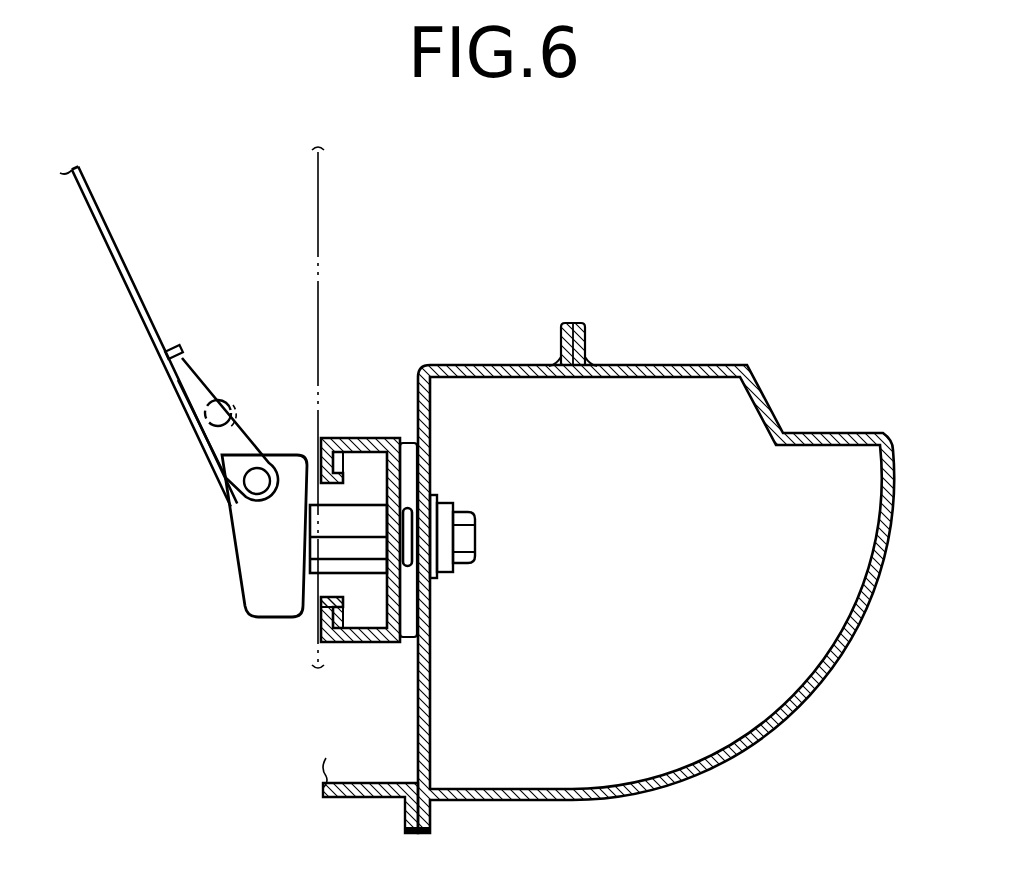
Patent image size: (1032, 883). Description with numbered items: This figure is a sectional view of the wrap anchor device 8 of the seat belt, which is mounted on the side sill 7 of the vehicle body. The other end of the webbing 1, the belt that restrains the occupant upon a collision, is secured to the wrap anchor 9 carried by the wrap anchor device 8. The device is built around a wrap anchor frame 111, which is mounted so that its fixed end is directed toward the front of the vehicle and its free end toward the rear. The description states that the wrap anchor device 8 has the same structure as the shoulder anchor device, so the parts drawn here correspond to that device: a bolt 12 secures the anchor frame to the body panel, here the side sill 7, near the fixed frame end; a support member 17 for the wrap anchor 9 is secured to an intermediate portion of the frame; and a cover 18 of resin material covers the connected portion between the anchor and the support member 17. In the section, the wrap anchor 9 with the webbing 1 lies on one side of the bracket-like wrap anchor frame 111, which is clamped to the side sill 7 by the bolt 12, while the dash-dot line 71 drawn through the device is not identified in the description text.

The webbing 1 is at (140, 218).
The side sill 7 is at (680, 352).
The center line of receptacle 71 is at (315, 349).
The wrap anchor device 8 is at (369, 541).
The wrap anchor 9 is at (213, 452).
The bolt 12 is at (476, 538).
The support member 17 is at (336, 546).
The cover 18 is at (247, 537).
The wrap anchor frame 111 is at (368, 656).